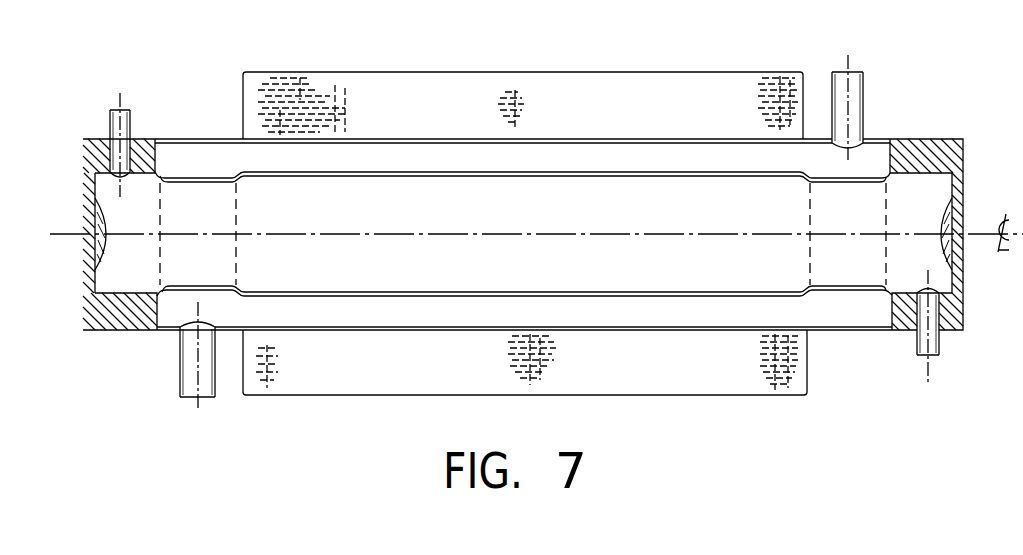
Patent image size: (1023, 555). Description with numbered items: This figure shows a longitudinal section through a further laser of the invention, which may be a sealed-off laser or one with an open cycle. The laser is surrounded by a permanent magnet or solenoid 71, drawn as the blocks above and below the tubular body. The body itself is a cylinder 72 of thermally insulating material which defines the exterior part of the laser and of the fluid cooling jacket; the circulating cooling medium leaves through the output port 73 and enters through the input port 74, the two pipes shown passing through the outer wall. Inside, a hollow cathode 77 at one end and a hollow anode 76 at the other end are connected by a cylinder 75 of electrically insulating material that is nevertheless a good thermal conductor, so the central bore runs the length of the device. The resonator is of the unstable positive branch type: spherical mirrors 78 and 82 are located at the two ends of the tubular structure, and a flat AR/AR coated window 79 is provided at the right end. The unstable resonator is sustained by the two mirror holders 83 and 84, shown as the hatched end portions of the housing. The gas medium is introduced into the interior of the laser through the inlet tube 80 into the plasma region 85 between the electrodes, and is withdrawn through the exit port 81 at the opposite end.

The permanent magnet or solenoid 71 is at (433, 80).
The cylinder of thermally insulating material 72 is at (673, 140).
The output port 73 is at (858, 101).
The input port 74 is at (182, 372).
The cylinder of electrically insulating material 75 is at (538, 298).
The anode 76 is at (848, 179).
The cathode 77 is at (228, 180).
The spherical mirror 78 is at (952, 192).
The flat AR/AR coated window 79 is at (963, 276).
The inlet tube 80 is at (917, 345).
The exit port 81 is at (128, 118).
The spherical mirror 82 is at (93, 212).
The mirror holder 83 is at (935, 140).
The mirror holder 84 is at (131, 330).
The plasma region 85 is at (457, 215).